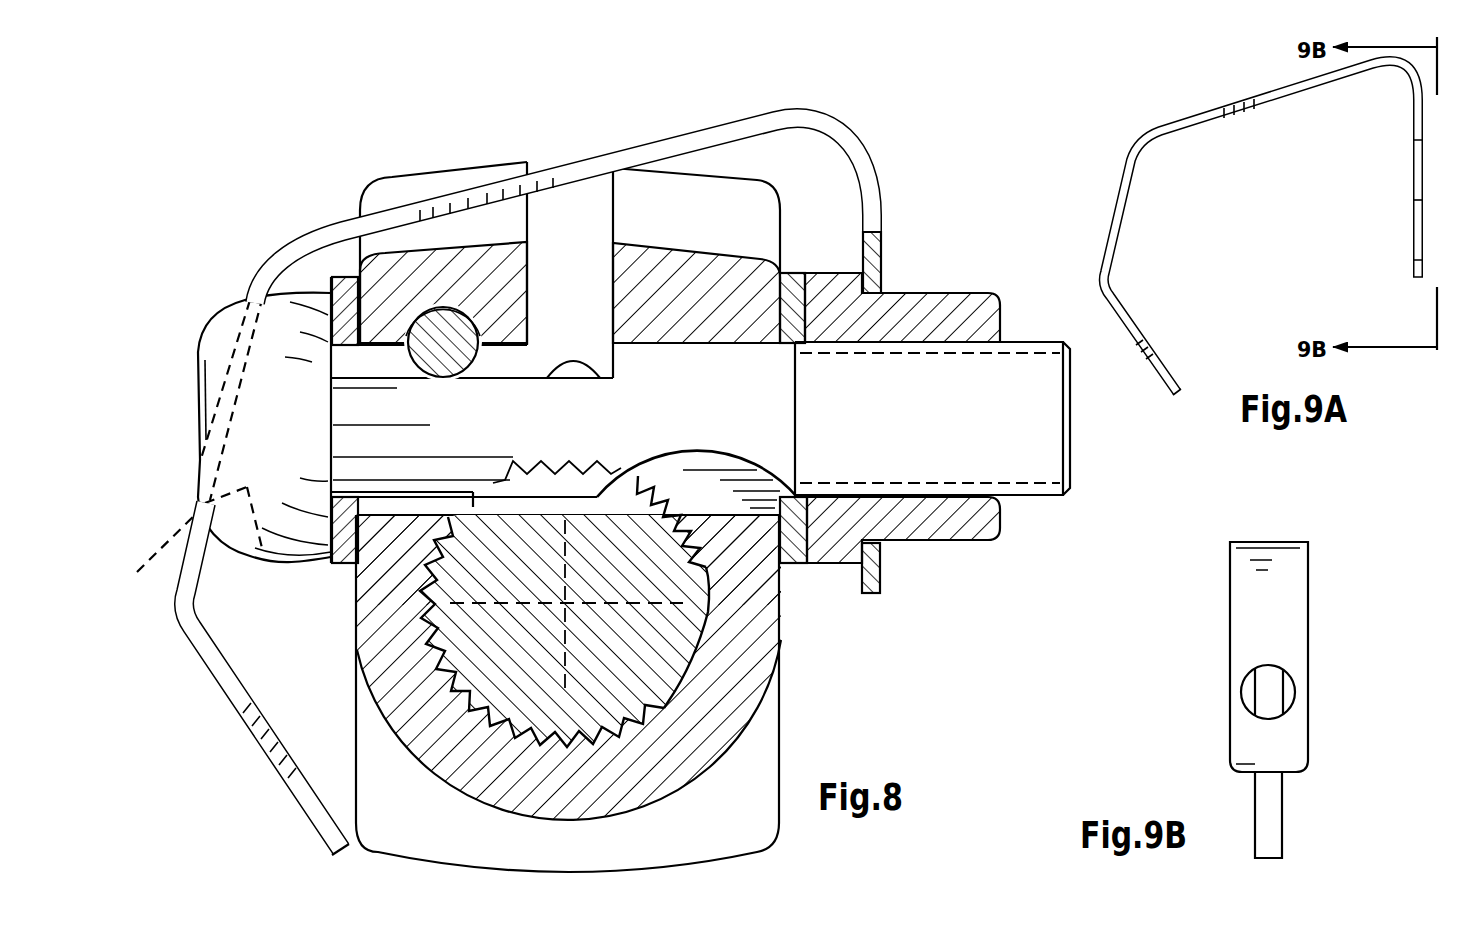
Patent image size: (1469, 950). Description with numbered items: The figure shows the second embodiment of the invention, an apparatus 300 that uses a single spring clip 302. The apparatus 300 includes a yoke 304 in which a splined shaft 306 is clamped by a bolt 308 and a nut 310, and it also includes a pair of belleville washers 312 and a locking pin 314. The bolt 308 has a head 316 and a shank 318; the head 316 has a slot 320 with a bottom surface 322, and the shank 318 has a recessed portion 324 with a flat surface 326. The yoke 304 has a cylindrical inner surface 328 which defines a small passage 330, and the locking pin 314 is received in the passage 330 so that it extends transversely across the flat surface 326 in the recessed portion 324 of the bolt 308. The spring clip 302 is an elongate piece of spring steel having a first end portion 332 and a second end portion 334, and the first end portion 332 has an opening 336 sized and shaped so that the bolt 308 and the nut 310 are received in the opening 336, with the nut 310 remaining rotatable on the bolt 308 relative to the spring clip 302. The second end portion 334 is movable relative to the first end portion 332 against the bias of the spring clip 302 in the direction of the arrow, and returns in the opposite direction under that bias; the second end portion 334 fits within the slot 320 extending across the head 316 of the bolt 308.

In FIG. 8, the apparatus 300 is at (226, 152).
In FIG. 8, the spring clip 302 is at (598, 150).
In FIG. 9A, the spring clip 302 is at (1128, 148).
In FIG. 9B, the spring clip 302 is at (1261, 540).
In FIG. 8, the yoke 304 is at (352, 650).
In FIG. 8, the splined shaft 306 is at (438, 668).
In FIG. 8, the bolt 308 is at (1027, 337).
In FIG. 8, the nut 310 is at (1005, 302).
In FIG. 8, the belleville washers 312 is at (348, 277).
In FIG. 8, the locking pin 314 is at (480, 325).
In FIG. 8, the head 316 is at (196, 381).
In FIG. 8, the shank 318 is at (388, 438).
In FIG. 8, the slot 320 is at (190, 454).
In FIG. 8, the bottom surface 322 is at (182, 546).
In FIG. 8, the recessed portion 324 is at (553, 346).
In FIG. 8, the flat surface 326 is at (600, 372).
In FIG. 8, the cylindrical inner surface 328 is at (432, 376).
In FIG. 8, the passage 330 is at (455, 367).
In FIG. 8, the first end portion 332 is at (882, 570).
In FIG. 9A, the first end portion 332 is at (1416, 128).
In FIG. 9B, the first end portion 332 is at (1243, 737).
In FIG. 8, the second end portion 334 is at (262, 752).
In FIG. 9A, the second end portion 334 is at (1128, 338).
In FIG. 9B, the second end portion 334 is at (1270, 832).
In FIG. 8, the opening 336 is at (889, 291).
In FIG. 9A, the opening 336 is at (1408, 211).
In FIG. 9B, the opening 336 is at (1258, 690).